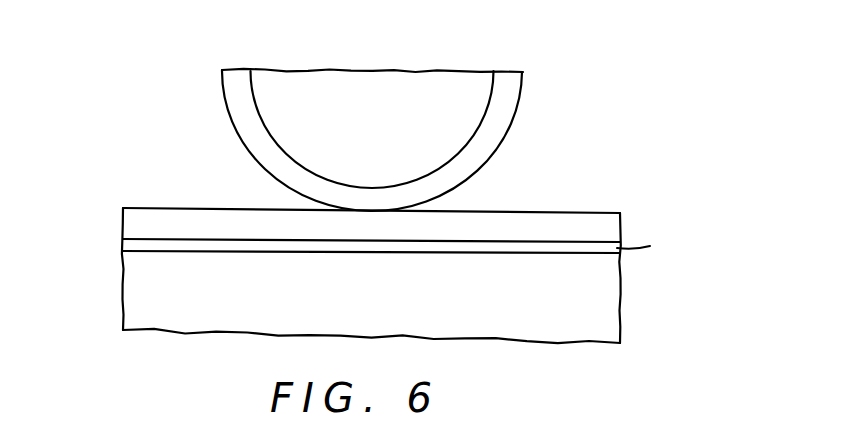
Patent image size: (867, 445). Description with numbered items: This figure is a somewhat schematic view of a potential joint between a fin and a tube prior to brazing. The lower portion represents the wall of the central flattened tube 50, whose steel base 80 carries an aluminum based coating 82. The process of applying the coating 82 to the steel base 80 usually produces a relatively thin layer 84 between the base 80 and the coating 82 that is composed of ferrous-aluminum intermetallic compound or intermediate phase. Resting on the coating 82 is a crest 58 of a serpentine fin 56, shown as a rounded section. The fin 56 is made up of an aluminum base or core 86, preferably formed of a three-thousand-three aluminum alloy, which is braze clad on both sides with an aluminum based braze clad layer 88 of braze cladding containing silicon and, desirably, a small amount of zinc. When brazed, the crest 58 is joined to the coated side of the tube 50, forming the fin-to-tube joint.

The central flattened tube 50 is at (556, 354).
The serpentine fin 56 is at (551, 77).
The crest 58 is at (378, 213).
The steel base 80 is at (613, 306).
The aluminum based coating 82 is at (617, 228).
The thin layer 84 is at (143, 242).
The aluminum base or core 86 is at (437, 73).
The aluminum based braze clad layer 88 is at (231, 95).